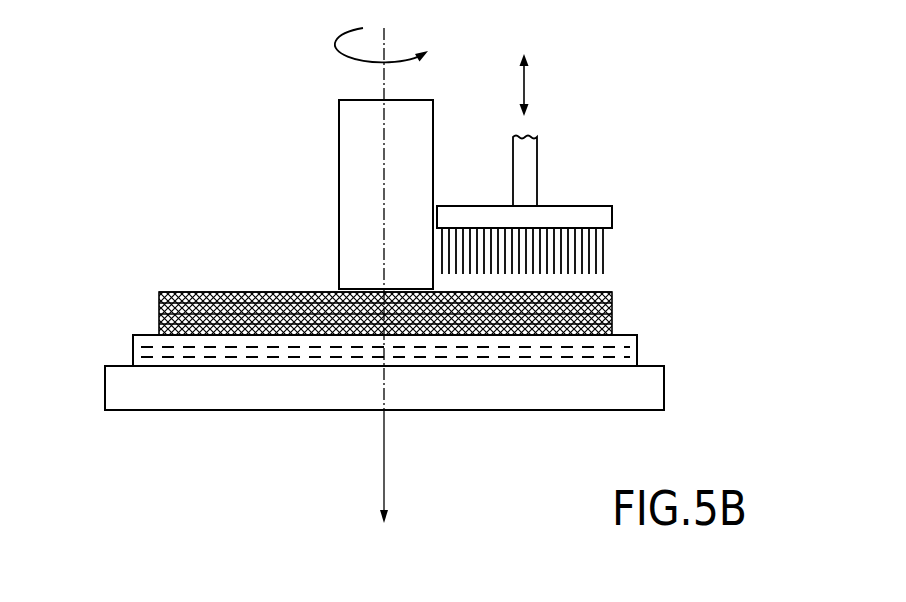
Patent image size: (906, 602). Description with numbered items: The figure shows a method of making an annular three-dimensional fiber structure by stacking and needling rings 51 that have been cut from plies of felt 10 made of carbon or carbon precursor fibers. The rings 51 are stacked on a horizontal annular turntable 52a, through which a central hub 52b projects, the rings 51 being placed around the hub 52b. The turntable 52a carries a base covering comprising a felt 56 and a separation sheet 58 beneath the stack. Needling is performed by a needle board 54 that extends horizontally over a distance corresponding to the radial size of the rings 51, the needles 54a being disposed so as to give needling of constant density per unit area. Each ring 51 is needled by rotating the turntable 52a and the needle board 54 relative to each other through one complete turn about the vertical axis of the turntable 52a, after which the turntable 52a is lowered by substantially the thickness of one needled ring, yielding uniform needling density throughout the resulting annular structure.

The felt 10 is at (158, 298).
The rings 51 is at (233, 280).
The turntable 52a is at (658, 396).
The central hub 52b is at (362, 122).
The needle board 54 is at (567, 215).
The needles 54a is at (592, 257).
The felt 56 is at (132, 352).
The separation sheet 58 is at (145, 322).